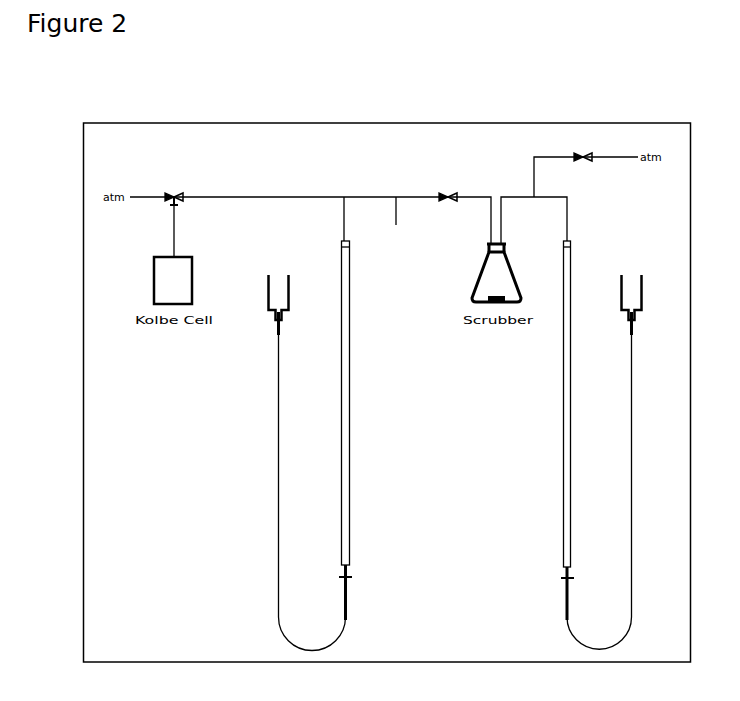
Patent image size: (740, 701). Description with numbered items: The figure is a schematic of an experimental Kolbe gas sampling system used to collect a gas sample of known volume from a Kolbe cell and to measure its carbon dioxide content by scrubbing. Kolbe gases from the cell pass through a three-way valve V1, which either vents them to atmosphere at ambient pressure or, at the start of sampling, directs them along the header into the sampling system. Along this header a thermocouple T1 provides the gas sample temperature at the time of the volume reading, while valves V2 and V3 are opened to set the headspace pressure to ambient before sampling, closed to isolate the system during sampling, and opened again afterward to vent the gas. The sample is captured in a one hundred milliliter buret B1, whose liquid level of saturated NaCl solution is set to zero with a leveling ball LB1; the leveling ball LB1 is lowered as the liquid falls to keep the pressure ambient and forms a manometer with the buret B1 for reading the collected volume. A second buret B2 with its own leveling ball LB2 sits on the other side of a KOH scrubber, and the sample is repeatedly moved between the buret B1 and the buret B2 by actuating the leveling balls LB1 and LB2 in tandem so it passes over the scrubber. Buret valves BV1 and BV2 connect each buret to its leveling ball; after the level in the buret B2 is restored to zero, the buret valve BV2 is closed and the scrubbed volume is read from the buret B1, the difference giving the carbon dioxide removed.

The three-way valve V1 is at (174, 189).
The valve V2 is at (448, 187).
The valve V3 is at (583, 147).
The thermocouple T1 is at (394, 222).
The buret B1 is at (357, 403).
The buret B2 is at (552, 404).
The buret valve BV1 is at (362, 592).
The buret valve BV2 is at (544, 593).
The leveling ball LB1 is at (261, 305).
The leveling ball LB2 is at (649, 305).